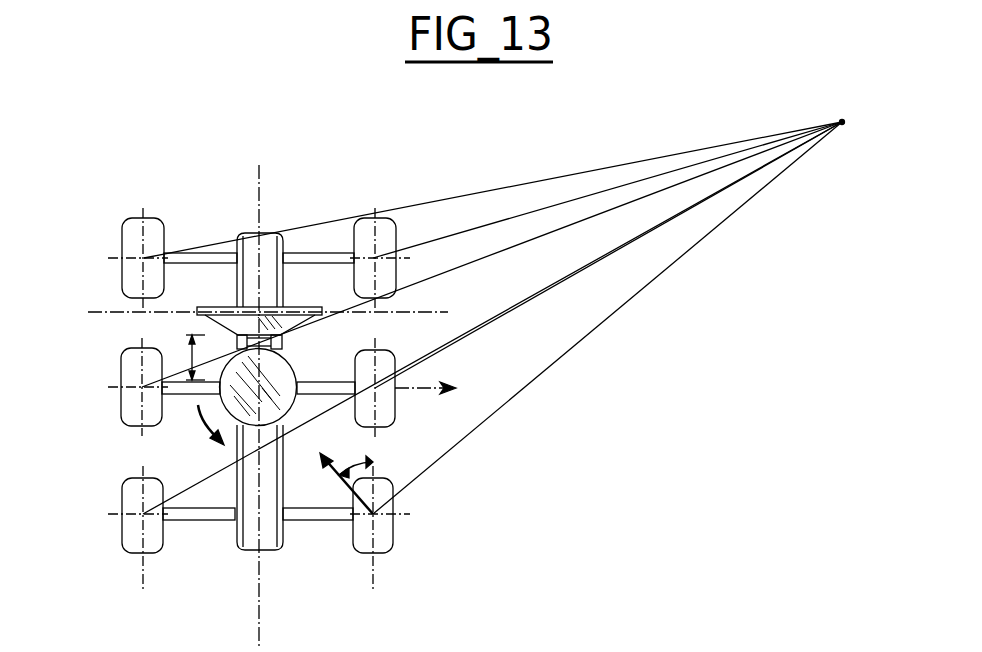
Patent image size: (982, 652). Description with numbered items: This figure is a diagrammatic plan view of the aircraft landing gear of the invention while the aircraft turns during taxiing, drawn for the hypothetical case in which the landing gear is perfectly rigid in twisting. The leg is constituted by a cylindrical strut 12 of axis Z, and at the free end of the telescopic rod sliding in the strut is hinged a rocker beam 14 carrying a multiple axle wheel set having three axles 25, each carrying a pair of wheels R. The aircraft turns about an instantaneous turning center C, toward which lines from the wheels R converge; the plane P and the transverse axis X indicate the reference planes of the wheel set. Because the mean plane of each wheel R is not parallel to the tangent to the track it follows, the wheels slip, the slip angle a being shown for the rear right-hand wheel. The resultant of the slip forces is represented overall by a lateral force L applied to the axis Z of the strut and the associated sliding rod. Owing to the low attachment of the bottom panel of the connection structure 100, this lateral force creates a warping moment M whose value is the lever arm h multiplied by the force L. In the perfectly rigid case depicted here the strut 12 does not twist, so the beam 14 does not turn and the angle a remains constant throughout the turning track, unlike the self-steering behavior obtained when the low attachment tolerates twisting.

The cylindrical strut 12 is at (285, 373).
The rocker beam 14 is at (270, 248).
The axles 25 is at (202, 520).
The connection structure 100 is at (285, 318).
The wheels R is at (153, 232).
The instantaneous turning center C is at (509, 304).
The longitudinal plane P is at (262, 175).
The transverse axis X is at (95, 312).
The axis of the strut Z is at (272, 385).
The lateral force L is at (425, 405).
The warping moment M is at (198, 427).
The lever arm of the lateral force h is at (186, 357).
The slip angle a is at (346, 475).